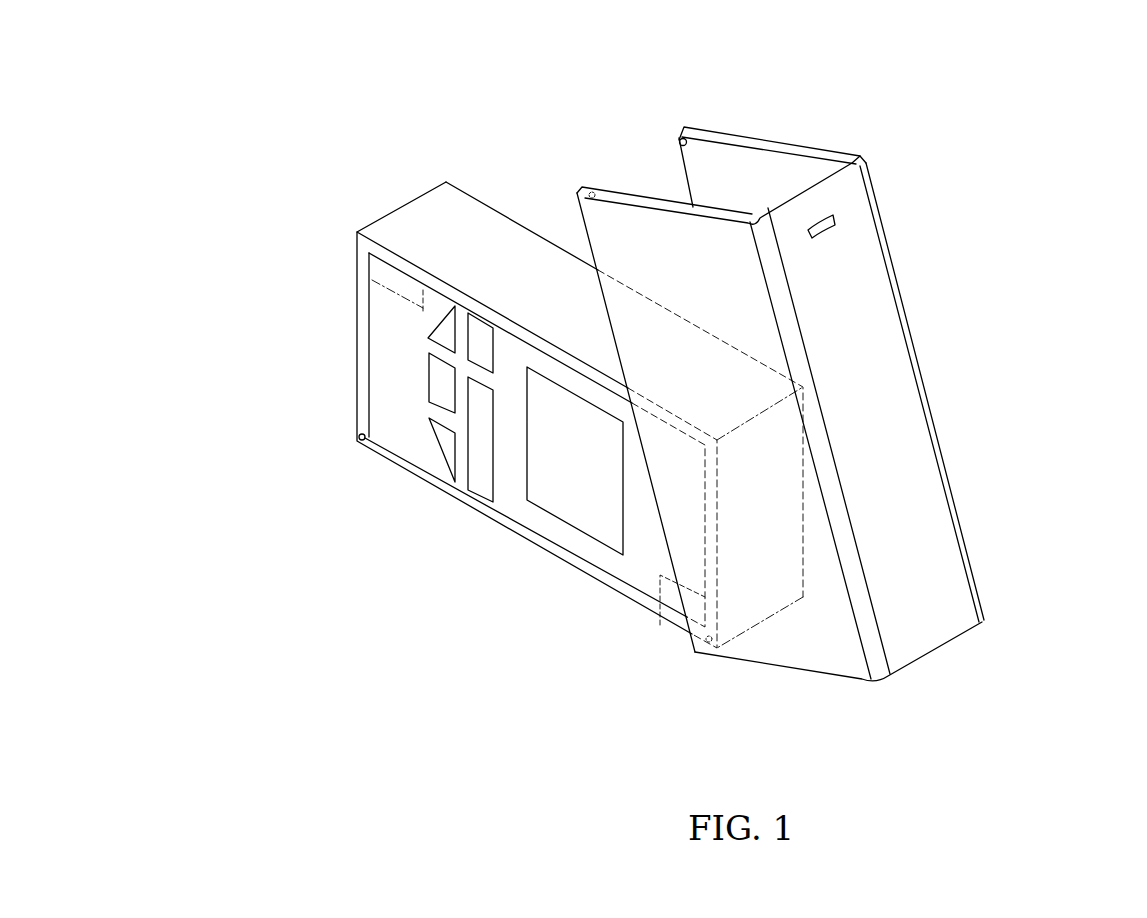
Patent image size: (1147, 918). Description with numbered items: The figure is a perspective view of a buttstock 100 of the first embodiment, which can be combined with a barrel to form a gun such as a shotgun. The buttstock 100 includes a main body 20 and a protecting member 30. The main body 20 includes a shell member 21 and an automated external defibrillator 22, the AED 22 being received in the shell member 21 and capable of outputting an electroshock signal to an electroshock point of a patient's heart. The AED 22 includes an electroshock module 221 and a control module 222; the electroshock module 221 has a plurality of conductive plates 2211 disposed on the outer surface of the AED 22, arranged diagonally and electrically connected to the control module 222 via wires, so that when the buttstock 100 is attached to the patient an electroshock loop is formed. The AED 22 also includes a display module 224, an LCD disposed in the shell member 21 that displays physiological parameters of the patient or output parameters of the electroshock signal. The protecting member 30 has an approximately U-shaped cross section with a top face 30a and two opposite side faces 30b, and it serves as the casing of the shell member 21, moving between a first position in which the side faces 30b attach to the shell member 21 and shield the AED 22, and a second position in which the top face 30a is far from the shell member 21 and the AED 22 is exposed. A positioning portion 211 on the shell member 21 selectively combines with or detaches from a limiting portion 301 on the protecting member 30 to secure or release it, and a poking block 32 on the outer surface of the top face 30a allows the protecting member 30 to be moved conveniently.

The buttstock 100 is at (66, 51).
The main body 20 is at (525, 153).
The shell member 21 is at (421, 224).
The positioning portion 211 is at (357, 441).
The automated external defibrillator 22 is at (437, 307).
The electroshock module 221 is at (423, 690).
The conductive plates 2211 is at (408, 288).
The control module 222 is at (481, 333).
The display module 224 is at (550, 402).
The protecting member 30 is at (992, 388).
The top face 30a is at (922, 520).
The side faces 30b is at (781, 128).
The limiting portion 301 is at (676, 141).
The poking block 32 is at (838, 224).